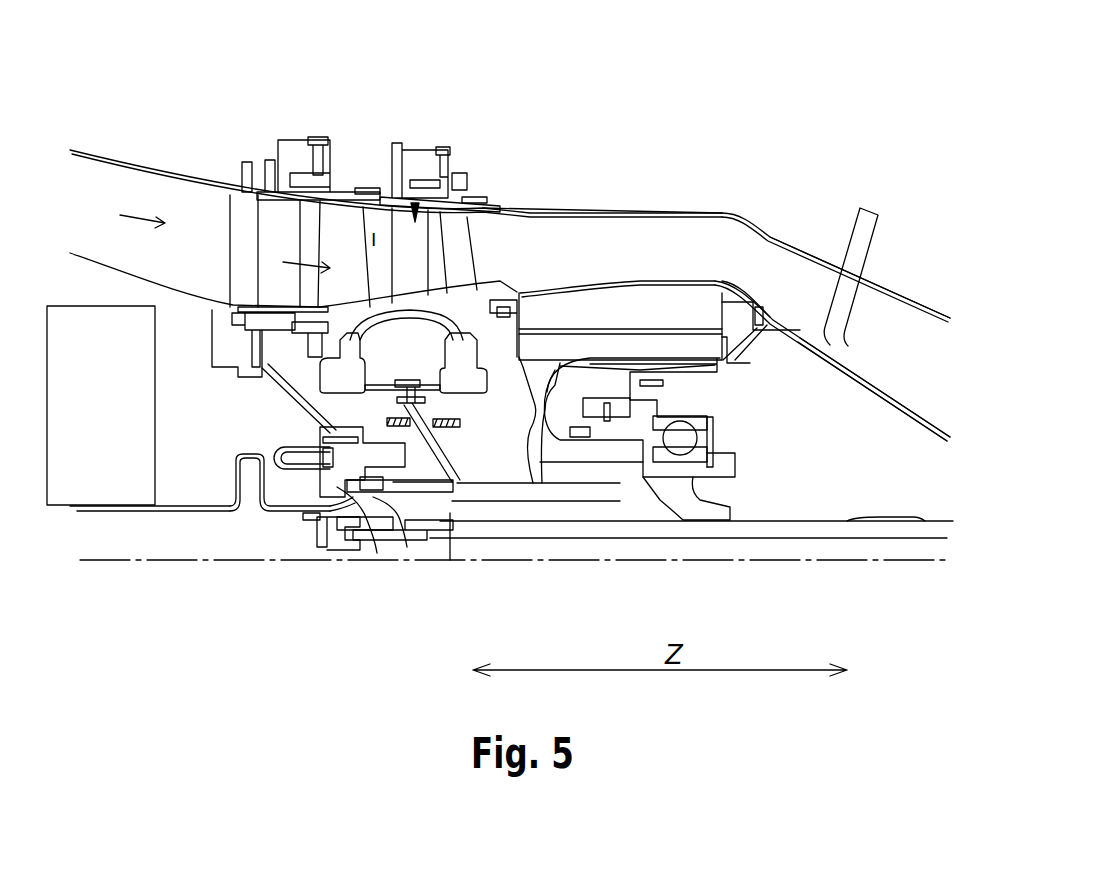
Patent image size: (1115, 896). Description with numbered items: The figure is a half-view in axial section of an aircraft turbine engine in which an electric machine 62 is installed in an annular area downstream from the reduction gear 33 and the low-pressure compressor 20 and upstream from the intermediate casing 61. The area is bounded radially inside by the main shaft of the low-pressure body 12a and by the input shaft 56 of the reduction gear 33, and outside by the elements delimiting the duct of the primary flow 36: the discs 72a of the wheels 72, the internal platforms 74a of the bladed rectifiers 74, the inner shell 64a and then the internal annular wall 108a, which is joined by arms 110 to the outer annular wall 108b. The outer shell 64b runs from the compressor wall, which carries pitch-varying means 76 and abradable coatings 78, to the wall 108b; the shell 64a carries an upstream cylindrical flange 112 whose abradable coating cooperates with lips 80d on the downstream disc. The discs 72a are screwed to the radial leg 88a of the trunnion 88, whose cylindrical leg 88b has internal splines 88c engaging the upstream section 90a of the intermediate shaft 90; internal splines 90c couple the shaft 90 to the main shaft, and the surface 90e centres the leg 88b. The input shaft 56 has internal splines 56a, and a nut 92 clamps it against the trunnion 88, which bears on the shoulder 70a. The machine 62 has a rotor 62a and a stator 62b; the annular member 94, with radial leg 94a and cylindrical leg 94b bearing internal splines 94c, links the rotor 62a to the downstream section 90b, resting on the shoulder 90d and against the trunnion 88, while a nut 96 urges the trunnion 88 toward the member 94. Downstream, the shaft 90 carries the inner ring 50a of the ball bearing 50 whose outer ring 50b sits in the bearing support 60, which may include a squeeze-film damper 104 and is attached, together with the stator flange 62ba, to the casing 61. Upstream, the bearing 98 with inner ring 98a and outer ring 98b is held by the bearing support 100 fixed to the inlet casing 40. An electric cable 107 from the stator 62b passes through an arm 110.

The inlet casing 40 is at (128, 120).
The low-pressure compressor 20 is at (363, 90).
The primary flow 36 is at (148, 217).
The bladed rectifiers 74 is at (238, 213).
The wheels 72 is at (340, 215).
The means for guiding in rotation and varying the pitch 76 is at (268, 115).
The abradable annular coatings 78 is at (357, 188).
The cylindrical flange 112 is at (537, 285).
The outer shell 64b is at (640, 193).
The inner shell 64a is at (585, 285).
The electric machine 62 is at (568, 272).
The lips 80d is at (513, 320).
The stator 62b is at (653, 320).
The rotor 62a is at (673, 330).
The annular flange 62ba is at (757, 307).
The bearing support 60 is at (708, 370).
The electric cable 107 is at (870, 220).
The intermediate casing 61 is at (894, 215).
The outer annular wall 108b is at (913, 293).
The arms 110 is at (870, 323).
The internal annular wall 108a is at (855, 366).
The reduction gear 33 is at (66, 522).
The input shaft 56 is at (140, 517).
The oil film damping system 104 is at (250, 476).
The internal platforms 74a is at (290, 307).
The bearing support 100 is at (310, 422).
The discs 72a is at (440, 373).
The trunnion 88 is at (468, 450).
The radial annular leg 88a is at (487, 486).
The cylindrical leg 88b is at (503, 492).
The internal splines 88c is at (533, 488).
The cylindrical shoulder 70a is at (457, 524).
The low-pressure body 12a is at (880, 538).
The annular member 94 is at (510, 385).
The radial annular leg 94a is at (587, 358).
The cylindrical leg 94b is at (622, 495).
The internal splines 94c is at (603, 490).
The bearing 50 is at (735, 437).
The outer bearing ring 50b is at (700, 423).
The inner bearing ring 50a is at (703, 455).
The cylindrical shoulder 90d is at (687, 482).
The intermediate shaft 90 is at (668, 515).
The downstream section 90b is at (655, 502).
The internal splines 90c is at (708, 523).
The outer cylindrical surface 90e is at (573, 485).
The bearing 98 is at (285, 500).
The inner bearing ring 98a is at (358, 487).
The outer bearing ring 98b is at (400, 532).
The nut 96 is at (322, 500).
The internal splines 56a is at (393, 528).
The nut 92 is at (352, 547).
The upstream section 90a is at (320, 547).